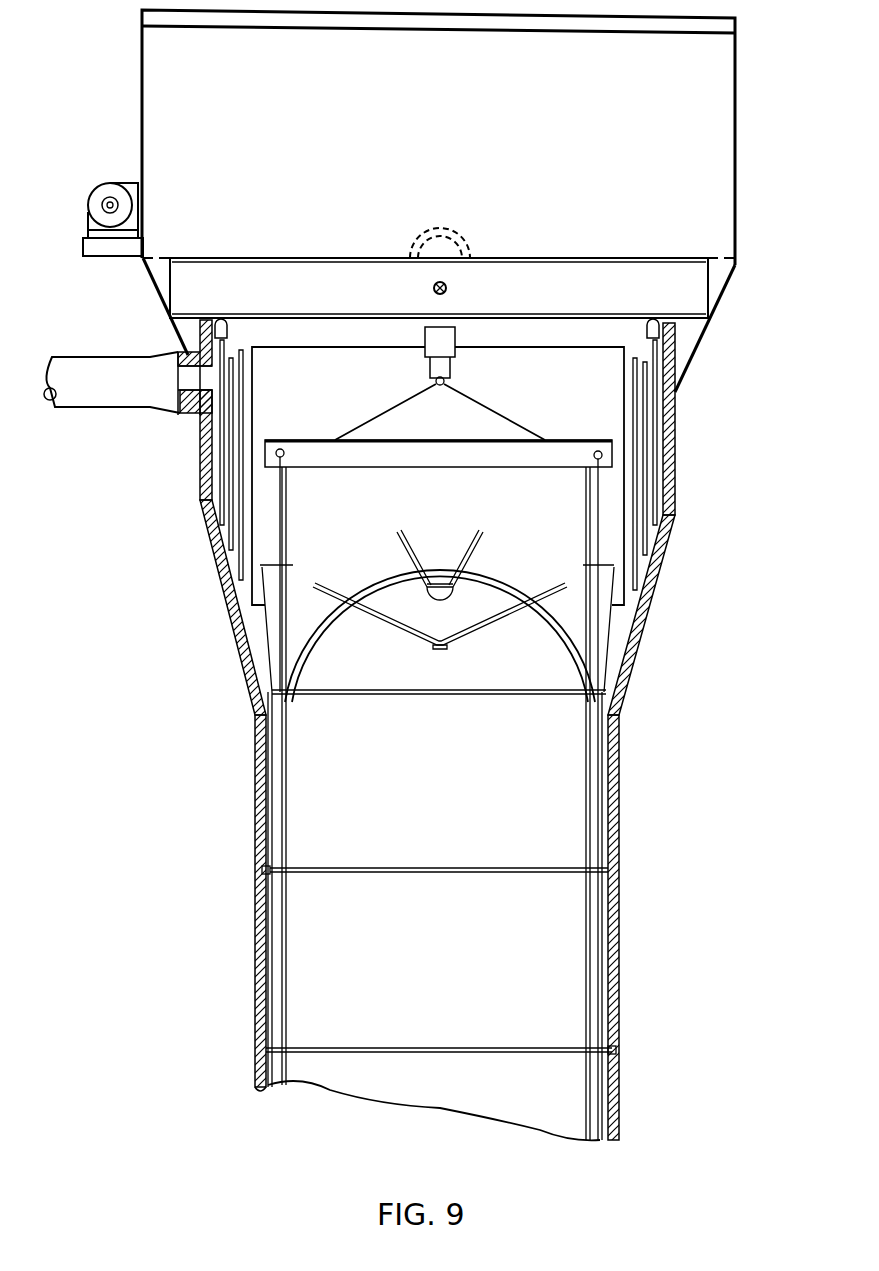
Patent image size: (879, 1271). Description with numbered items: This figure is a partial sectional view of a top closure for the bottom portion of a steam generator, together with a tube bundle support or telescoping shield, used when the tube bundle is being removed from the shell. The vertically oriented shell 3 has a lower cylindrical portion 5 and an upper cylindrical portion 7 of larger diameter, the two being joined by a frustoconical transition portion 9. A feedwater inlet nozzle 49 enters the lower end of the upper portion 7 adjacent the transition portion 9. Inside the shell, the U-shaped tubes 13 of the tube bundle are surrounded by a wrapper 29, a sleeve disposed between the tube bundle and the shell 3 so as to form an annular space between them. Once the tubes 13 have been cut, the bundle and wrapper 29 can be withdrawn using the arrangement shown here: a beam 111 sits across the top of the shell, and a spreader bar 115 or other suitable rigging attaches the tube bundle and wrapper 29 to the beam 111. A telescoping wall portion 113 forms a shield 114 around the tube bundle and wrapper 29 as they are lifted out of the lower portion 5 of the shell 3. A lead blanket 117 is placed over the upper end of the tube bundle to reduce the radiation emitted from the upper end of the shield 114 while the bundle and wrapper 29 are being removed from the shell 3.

The shell 3 is at (255, 972).
The lower cylindrical portion 5 is at (256, 838).
The upper cylindrical portion 7 is at (200, 482).
The frustoconical transition portion 9 is at (226, 618).
The U-shaped tubes 13 is at (287, 862).
The wrapper 29 is at (268, 750).
The feedwater inlet nozzle 49 is at (115, 405).
The beam 111 is at (545, 268).
The telescoping wall portion 113 is at (637, 472).
The shield 114 is at (645, 436).
The spreader bar 115 is at (380, 452).
The lead blanket 117 is at (466, 532).